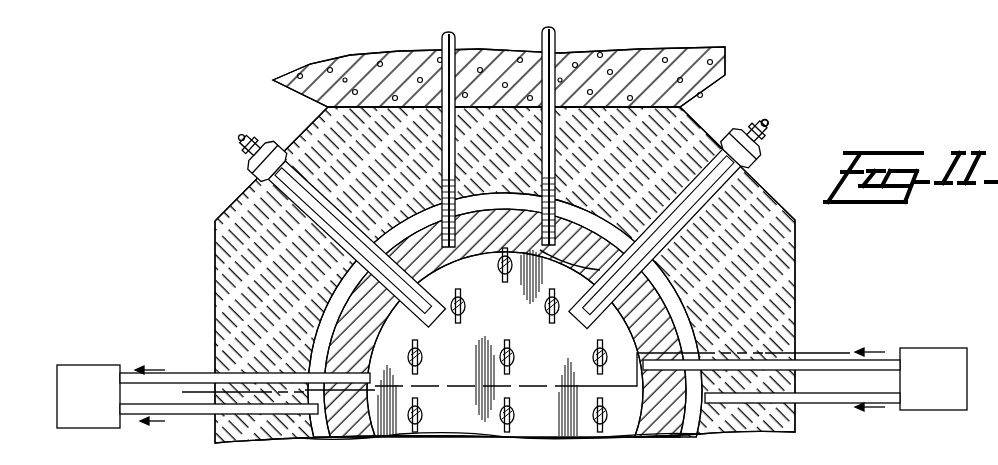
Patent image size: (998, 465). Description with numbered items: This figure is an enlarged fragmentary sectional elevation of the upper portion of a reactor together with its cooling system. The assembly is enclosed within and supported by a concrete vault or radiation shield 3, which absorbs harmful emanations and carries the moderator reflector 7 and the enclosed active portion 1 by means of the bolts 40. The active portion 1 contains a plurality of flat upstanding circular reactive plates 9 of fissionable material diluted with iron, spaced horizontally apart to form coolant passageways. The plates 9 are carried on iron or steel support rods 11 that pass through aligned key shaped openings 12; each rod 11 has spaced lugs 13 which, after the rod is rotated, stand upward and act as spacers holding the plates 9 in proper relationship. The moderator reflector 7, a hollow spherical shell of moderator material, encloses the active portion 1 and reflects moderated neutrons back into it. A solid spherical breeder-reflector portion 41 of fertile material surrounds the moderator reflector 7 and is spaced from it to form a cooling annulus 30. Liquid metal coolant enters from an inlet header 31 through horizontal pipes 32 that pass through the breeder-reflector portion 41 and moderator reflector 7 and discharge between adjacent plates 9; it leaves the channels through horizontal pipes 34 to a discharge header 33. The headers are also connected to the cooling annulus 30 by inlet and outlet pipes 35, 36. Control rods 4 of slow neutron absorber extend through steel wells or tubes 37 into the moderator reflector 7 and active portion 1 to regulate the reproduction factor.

The active portion 1 is at (569, 245).
The concrete vault or radiation shield 3 is at (655, 88).
The control rods 4 is at (759, 120).
The moderator reflector 7 is at (654, 317).
The reactive plates 9 is at (400, 344).
The support rods 11 is at (547, 301).
The key shaped holes or openings 12 is at (190, 383).
The lugs 13 is at (497, 262).
The cooling annulus 30 is at (688, 323).
The inlet header 31 is at (930, 411).
The horizontal pipes 32 is at (878, 360).
The discharge header 33 is at (95, 429).
The horizontal pipes 34 is at (133, 373).
The inlet pipe 35 is at (838, 404).
The outlet pipe 36 is at (200, 416).
The wells or tubes 37 is at (325, 236).
The bolts 40 is at (546, 34).
The breeder-reflector portion 41 is at (767, 276).